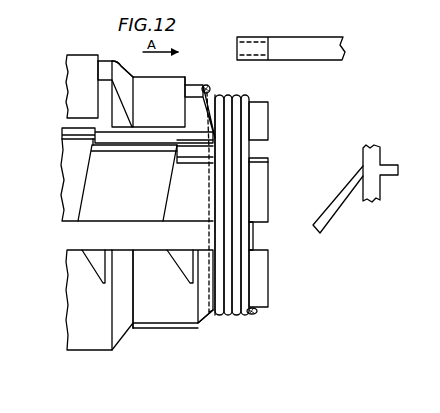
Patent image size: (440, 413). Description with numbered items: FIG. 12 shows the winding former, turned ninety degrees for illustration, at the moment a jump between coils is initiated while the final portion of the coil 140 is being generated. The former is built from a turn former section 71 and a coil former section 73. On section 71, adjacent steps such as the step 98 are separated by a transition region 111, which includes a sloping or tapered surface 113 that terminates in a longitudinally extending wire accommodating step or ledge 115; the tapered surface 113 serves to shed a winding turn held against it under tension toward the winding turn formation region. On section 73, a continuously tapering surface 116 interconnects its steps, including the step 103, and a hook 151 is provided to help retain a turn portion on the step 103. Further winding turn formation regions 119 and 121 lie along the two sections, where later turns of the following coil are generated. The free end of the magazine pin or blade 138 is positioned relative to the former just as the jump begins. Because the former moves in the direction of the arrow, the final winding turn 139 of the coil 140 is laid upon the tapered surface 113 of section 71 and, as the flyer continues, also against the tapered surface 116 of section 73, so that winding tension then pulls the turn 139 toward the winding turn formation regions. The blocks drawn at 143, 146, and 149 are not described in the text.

The turn former section 71 is at (75, 79).
The coil former section 73 is at (70, 319).
The step 98 is at (167, 105).
The step 103 is at (173, 303).
The transition region 111 is at (212, 78).
The inclined or tapered surface 113 is at (200, 84).
The winding turn accommodating step 115 is at (214, 326).
The continuously tapering surface 116 is at (208, 325).
The winding turn formation region 119 is at (123, 67).
The winding turn formation region 121 is at (135, 329).
The magazine pin or blade 138 is at (318, 37).
The final winding turn 139 is at (212, 88).
The coil 140 is at (250, 149).
The spring end 143 is at (224, 314).
The clamp block 146 is at (258, 101).
The bottom edge 149 is at (170, 325).
The hook 151 is at (193, 256).